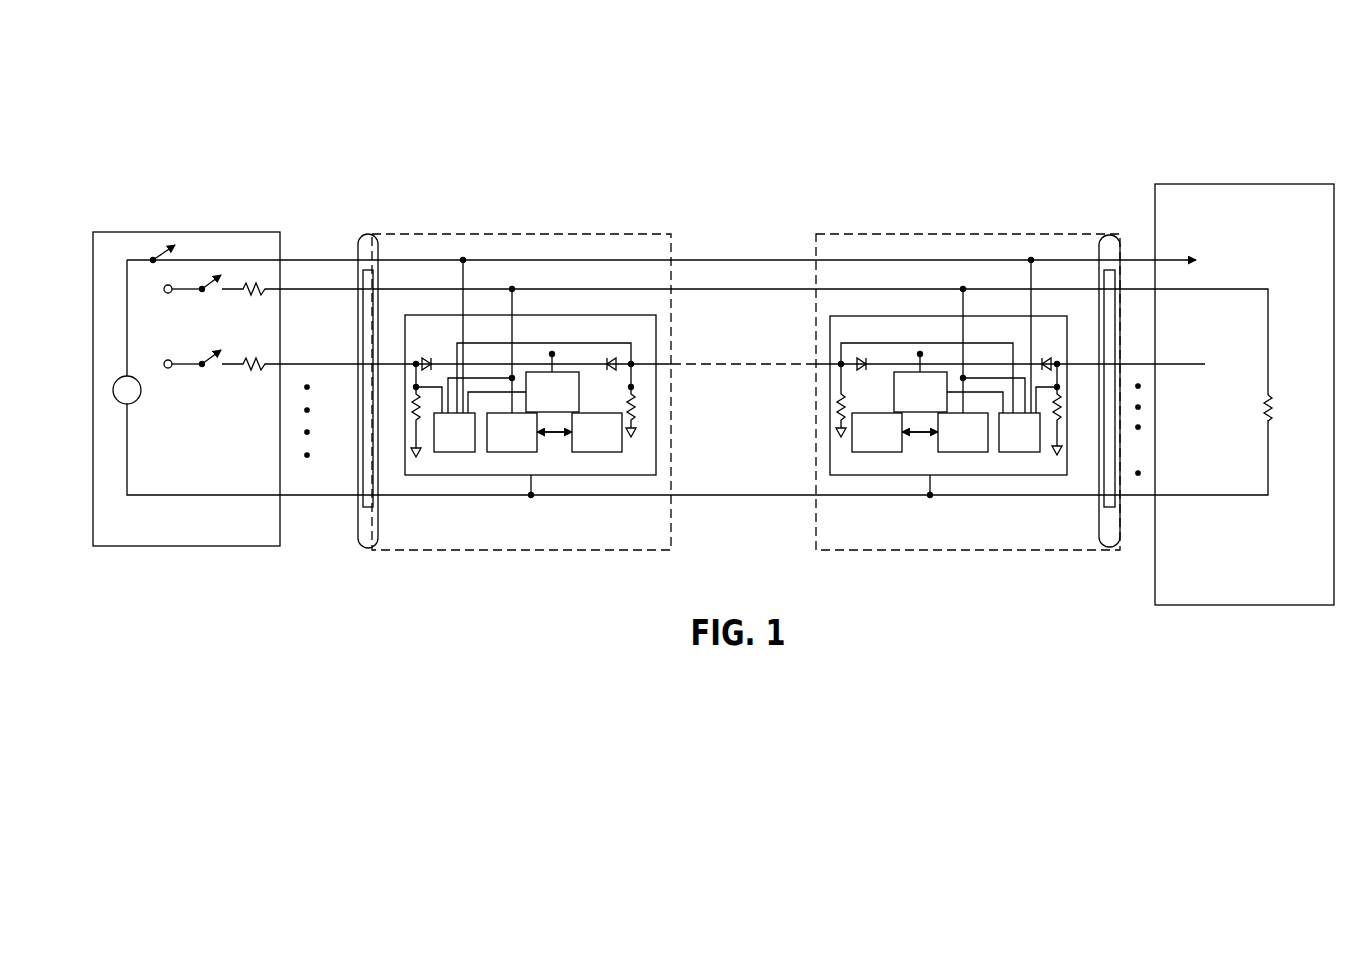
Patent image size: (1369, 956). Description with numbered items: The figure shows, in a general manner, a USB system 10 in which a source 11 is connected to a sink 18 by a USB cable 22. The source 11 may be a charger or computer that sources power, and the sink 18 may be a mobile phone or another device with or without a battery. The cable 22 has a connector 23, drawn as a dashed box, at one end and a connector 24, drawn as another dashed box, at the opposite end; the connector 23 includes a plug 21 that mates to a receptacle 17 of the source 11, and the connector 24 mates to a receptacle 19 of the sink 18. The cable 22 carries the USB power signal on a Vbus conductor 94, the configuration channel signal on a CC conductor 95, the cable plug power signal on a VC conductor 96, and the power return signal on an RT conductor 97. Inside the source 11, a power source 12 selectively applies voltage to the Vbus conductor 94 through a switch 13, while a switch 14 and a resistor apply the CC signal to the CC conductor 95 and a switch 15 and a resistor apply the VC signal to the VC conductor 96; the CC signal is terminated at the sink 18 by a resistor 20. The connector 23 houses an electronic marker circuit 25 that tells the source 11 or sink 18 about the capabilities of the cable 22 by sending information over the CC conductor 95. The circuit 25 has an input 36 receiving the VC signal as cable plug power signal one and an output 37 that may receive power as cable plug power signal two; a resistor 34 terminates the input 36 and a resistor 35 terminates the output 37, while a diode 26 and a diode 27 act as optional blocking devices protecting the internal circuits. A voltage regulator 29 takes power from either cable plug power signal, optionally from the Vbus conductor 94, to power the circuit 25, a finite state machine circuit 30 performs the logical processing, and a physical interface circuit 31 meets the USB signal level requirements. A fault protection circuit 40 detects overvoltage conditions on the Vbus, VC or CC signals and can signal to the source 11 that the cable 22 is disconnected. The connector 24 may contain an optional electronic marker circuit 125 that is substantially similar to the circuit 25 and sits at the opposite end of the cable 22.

The USB system 10 is at (113, 127).
The source 11 is at (128, 232).
The power source 12 is at (141, 395).
The switch 13 is at (151, 258).
The switch 14 is at (213, 297).
The switch 15 is at (213, 372).
The receptacle 17 is at (311, 221).
The sink 18 is at (1276, 184).
The receptacle 19 is at (1143, 236).
The resistor 20 is at (1263, 415).
The plug 21 is at (369, 234).
The USB cable 22 is at (711, 189).
The connector 23 is at (637, 234).
The connector 24 is at (924, 234).
The electronic marker circuit 25 is at (568, 315).
The diode 26 is at (425, 357).
The diode 27 is at (620, 400).
The voltage regulator 29 is at (580, 392).
The finite state machine circuit 30 is at (600, 452).
The physical interface circuit 31 is at (513, 452).
The resistor 34 is at (408, 415).
The resistor 35 is at (638, 386).
The input 36 is at (415, 361).
The output 37 is at (630, 357).
The fault protection circuit 40 is at (458, 452).
The Vbus conductor 94 is at (324, 262).
The CC conductor 95 is at (341, 297).
The VC conductor 96 is at (345, 362).
The RT conductor 97 is at (303, 499).
The electronic marker circuit 125 is at (848, 316).